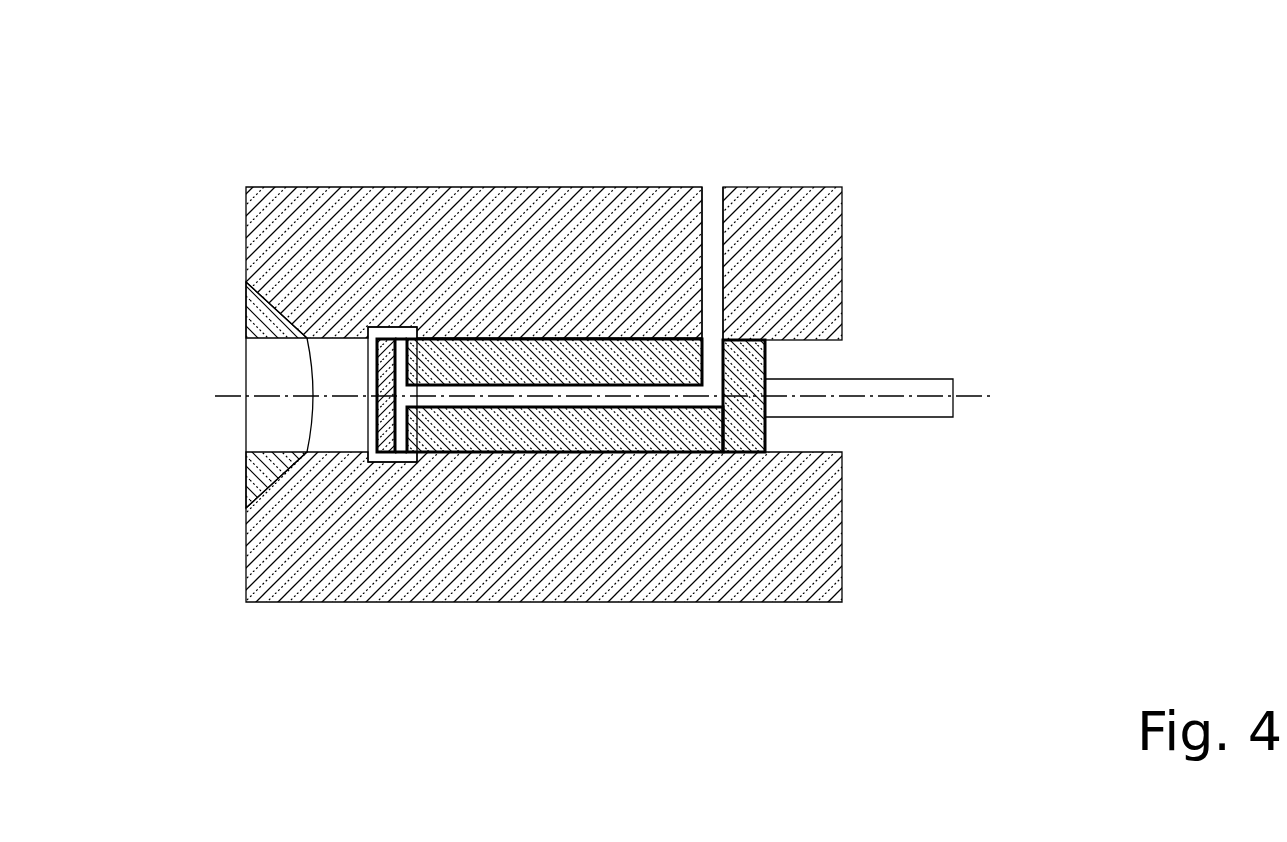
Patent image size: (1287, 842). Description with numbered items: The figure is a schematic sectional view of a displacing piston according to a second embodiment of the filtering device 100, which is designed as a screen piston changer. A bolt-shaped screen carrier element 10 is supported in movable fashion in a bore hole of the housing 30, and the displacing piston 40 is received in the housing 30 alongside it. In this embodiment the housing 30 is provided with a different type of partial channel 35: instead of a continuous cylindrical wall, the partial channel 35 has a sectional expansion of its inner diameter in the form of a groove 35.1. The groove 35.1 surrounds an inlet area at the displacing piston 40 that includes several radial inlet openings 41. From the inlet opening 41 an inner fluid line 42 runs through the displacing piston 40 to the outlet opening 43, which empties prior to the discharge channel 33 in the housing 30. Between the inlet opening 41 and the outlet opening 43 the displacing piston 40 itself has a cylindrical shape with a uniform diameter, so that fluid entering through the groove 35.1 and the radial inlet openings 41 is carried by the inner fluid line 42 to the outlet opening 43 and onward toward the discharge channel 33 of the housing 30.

The filtering device 100 is at (142, 117).
The screen carrier element 10 is at (256, 318).
The housing 30 is at (793, 228).
The discharge channel 33 is at (708, 208).
The partial channel 35 is at (336, 360).
The groove 35.1 is at (392, 335).
The displacing piston 40 is at (577, 360).
The radial inlet opening 41 is at (400, 438).
The inner fluid line 42 is at (556, 402).
The outlet opening 43 is at (708, 372).